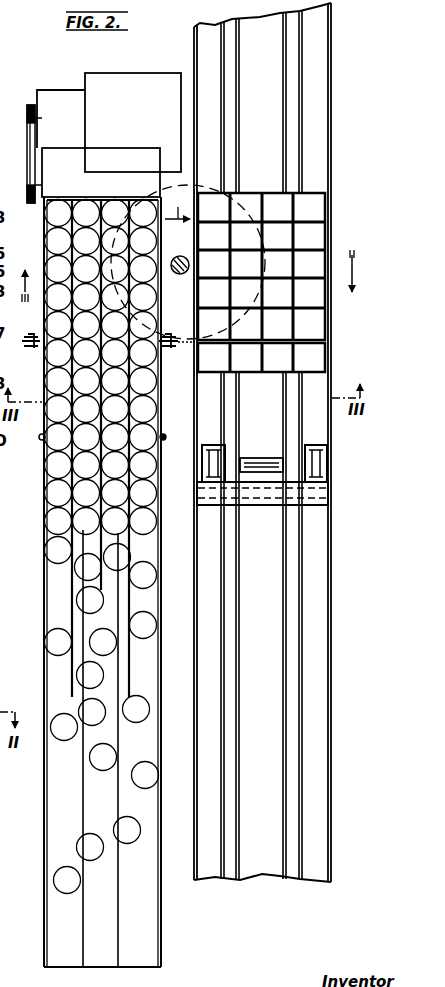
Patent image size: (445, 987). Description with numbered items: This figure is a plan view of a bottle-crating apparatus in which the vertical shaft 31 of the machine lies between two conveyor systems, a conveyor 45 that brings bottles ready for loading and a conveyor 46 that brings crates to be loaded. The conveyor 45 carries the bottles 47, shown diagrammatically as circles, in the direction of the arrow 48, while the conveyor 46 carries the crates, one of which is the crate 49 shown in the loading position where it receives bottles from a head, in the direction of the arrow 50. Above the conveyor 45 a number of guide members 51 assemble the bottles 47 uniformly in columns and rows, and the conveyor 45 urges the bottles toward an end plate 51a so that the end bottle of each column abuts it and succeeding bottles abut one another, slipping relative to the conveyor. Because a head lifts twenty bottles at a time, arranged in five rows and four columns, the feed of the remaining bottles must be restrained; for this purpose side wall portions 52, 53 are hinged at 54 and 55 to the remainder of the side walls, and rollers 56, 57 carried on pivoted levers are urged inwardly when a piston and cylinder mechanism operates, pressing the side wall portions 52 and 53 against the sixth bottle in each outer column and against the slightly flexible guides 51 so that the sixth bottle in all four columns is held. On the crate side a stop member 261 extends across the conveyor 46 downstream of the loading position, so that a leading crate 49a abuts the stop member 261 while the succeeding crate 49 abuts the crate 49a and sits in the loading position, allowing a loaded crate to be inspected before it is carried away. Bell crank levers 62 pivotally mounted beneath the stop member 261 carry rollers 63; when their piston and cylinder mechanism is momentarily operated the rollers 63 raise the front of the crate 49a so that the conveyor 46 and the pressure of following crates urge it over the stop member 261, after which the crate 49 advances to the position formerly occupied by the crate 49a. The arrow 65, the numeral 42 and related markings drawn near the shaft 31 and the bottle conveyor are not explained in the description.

The vertical shaft 31 is at (180, 274).
The magazine tube 42 is at (80, 582).
The conveyor 45 is at (44, 827).
The conveyor 46 is at (332, 560).
The bottles 47 is at (60, 880).
The arrow 48 is at (23, 275).
The crate 49 is at (327, 210).
The crate 49a is at (327, 366).
The arrow 50 is at (355, 283).
The guide members 51 is at (71, 533).
The end plate 51a is at (82, 200).
The side wall portion 52 is at (45, 368).
The side wall portion 53 is at (162, 367).
The hinge 54 is at (30, 438).
The hinge 55 is at (175, 438).
The roller 56 is at (28, 336).
The roller 57 is at (170, 336).
The bell crank levers 62 is at (202, 462).
The rollers 63 is at (310, 452).
The direction arrow 65 is at (177, 205).
The stop member 261 is at (262, 497).